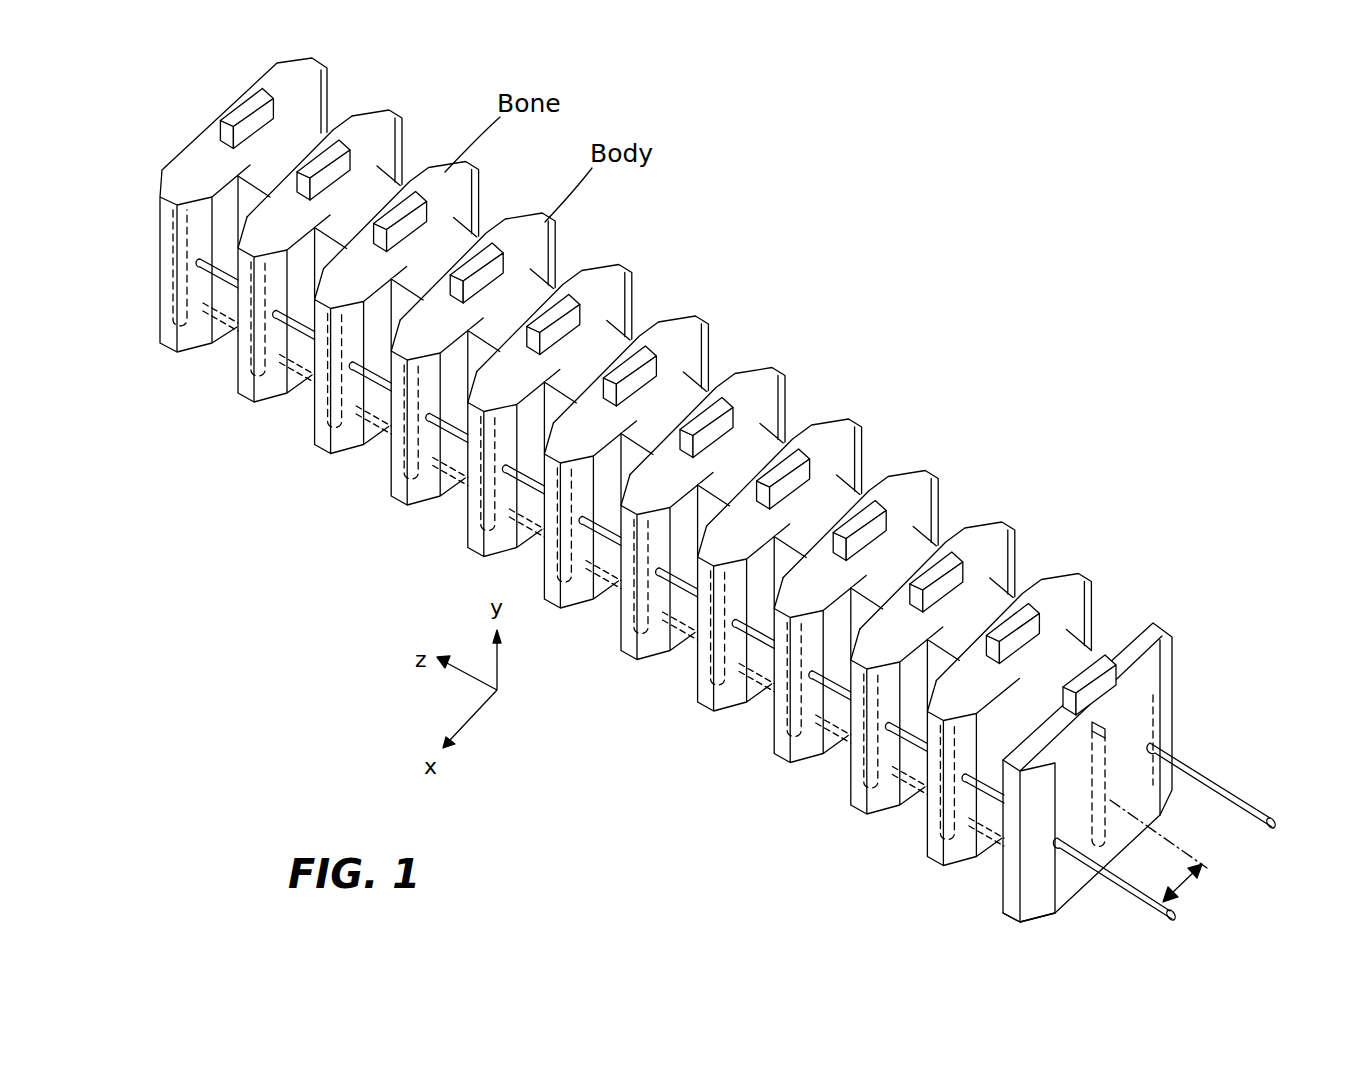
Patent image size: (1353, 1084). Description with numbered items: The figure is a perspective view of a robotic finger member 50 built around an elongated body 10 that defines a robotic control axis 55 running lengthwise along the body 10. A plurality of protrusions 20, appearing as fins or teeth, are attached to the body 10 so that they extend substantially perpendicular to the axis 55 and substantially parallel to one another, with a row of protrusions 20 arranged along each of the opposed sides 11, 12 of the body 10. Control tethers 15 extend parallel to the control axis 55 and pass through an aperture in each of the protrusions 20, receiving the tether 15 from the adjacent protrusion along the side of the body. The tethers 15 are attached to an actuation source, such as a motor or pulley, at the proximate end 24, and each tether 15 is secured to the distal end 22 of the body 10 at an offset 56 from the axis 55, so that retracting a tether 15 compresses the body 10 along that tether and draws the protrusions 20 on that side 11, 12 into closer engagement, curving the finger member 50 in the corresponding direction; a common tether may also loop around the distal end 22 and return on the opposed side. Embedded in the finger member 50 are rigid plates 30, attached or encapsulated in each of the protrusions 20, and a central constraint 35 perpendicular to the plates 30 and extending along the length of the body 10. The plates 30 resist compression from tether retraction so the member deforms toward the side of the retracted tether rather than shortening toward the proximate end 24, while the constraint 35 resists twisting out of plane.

The elongated body 10 is at (703, 501).
The opposed side 11 is at (224, 96).
The opposed side 12 is at (412, 104).
The control tether 15 is at (688, 648).
The protrusions 20 is at (372, 540).
The distal end 22 is at (199, 247).
The proximate end 24 is at (1126, 727).
The rigid plates 30 is at (628, 392).
The central constraint 35 is at (1105, 738).
The finger member 50 is at (1068, 450).
The robotic control axis 55 is at (1235, 866).
The offset 56 is at (1182, 888).